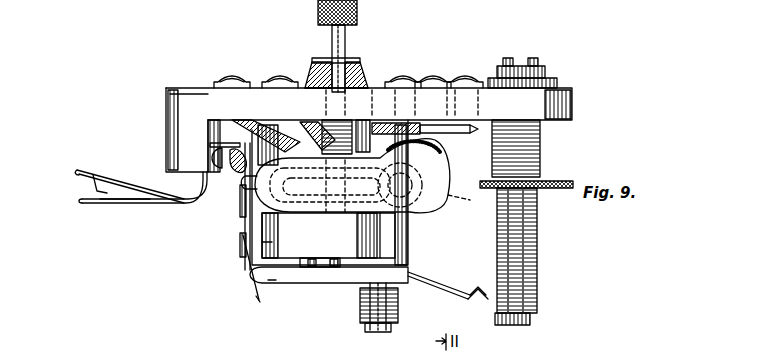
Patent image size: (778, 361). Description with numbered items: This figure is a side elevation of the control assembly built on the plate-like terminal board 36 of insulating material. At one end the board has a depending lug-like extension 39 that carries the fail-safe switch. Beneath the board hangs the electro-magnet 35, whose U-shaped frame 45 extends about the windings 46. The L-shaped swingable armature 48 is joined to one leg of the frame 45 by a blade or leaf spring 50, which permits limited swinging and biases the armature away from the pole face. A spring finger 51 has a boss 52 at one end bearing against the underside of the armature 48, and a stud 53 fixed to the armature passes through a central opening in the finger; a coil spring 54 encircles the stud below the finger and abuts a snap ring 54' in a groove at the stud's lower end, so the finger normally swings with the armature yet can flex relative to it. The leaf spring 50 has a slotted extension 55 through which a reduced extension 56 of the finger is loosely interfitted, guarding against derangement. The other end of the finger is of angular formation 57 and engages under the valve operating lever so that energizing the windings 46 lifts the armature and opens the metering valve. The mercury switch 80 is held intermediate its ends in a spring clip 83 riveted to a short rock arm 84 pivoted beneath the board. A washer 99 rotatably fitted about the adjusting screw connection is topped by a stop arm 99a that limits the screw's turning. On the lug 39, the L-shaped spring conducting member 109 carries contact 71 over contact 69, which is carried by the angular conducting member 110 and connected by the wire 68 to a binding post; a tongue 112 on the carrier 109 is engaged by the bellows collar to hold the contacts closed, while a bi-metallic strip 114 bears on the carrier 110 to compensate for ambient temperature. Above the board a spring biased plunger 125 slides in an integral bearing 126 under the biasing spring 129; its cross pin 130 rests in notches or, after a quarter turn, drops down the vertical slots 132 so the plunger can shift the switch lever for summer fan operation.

The electro-magnet 35 is at (270, 245).
The terminal board 36 is at (560, 116).
The depending lug-like extension 39 is at (188, 146).
The U-shaped frame 45 is at (405, 256).
The windings 46 is at (346, 244).
The swingable armature 48 is at (312, 272).
The blade or leaf spring 50 is at (245, 225).
The spring finger 51 is at (448, 283).
The boss 52 is at (271, 283).
The stud 53 is at (396, 307).
The coil spring 54 is at (354, 315).
The snap ring 54' is at (379, 341).
The slotted extension 55 is at (258, 300).
The reduced extension 56 is at (253, 292).
The angular formation 57 is at (484, 268).
The wire 68 is at (233, 165).
The contact 69 is at (84, 206).
The contact 71 is at (92, 151).
The mercury switch 80 is at (332, 196).
The spring clip 83 is at (610, 346).
The rock arm 84 is at (431, 212).
The washer 99 is at (553, 186).
The stop arm 99a is at (565, 180).
The L-shaped spring conducting member 109 is at (120, 178).
The angular conducting member 110 is at (182, 206).
The tongue 112 is at (88, 191).
The bi-metallic strip 114 is at (146, 201).
The spring biased plunger 125 is at (346, 40).
The bearing 126 is at (376, 79).
The biasing spring 129 is at (306, 84).
The cross pin 130 is at (328, 61).
The vertical slots 132 is at (350, 76).